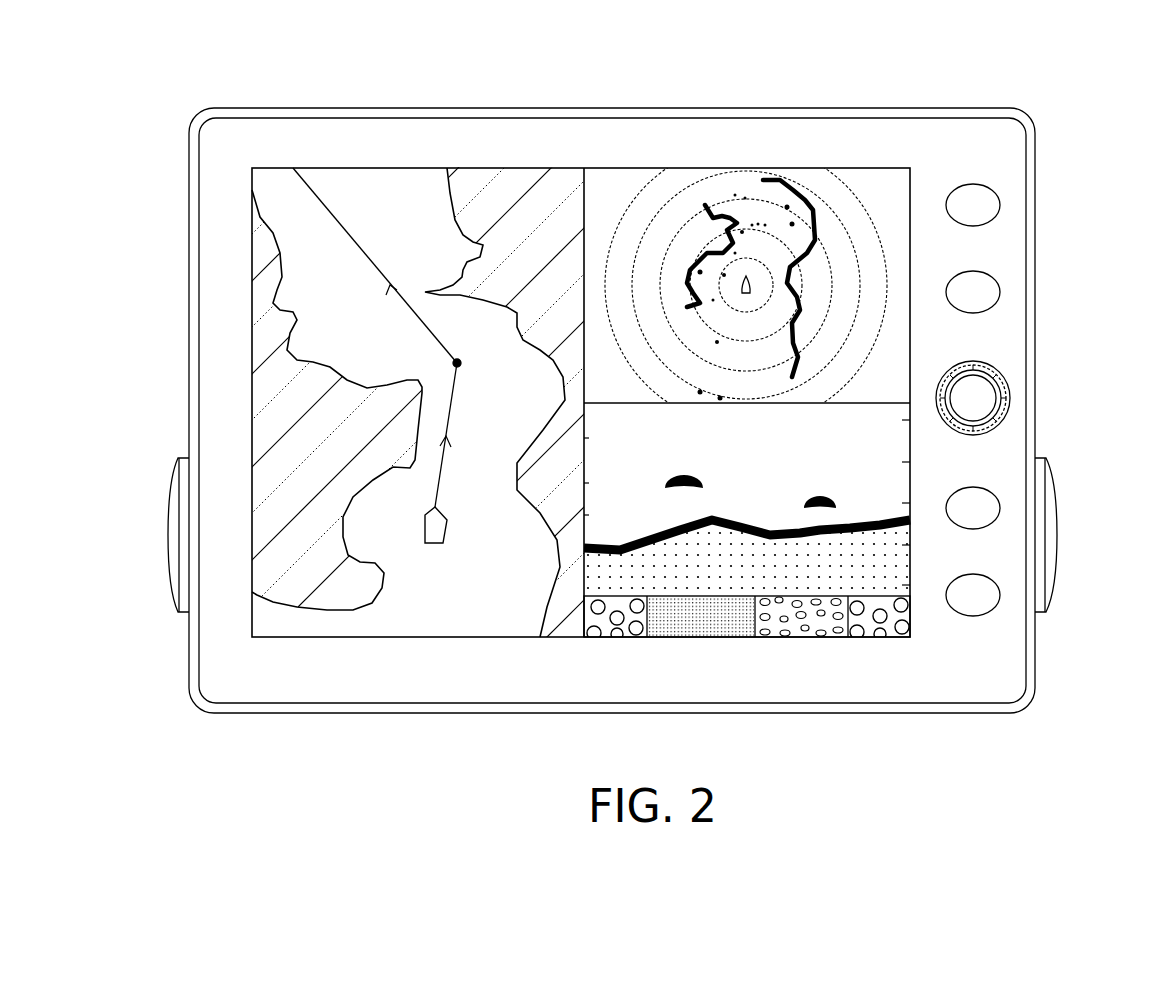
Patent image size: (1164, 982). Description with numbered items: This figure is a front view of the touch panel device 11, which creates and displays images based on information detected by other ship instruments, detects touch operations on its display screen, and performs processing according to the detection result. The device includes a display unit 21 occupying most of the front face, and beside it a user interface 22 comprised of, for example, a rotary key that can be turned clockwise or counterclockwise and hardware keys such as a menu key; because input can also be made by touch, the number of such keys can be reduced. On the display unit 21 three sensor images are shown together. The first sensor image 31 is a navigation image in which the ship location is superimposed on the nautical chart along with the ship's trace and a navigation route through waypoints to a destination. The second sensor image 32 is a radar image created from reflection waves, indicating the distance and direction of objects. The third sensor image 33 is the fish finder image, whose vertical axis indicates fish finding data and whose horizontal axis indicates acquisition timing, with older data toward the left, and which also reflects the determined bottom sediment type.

The touch panel device 11 is at (1106, 138).
The display unit 21 is at (923, 170).
The user interface 22 is at (1012, 370).
The first sensor image 31 is at (254, 196).
The second sensor image 32 is at (908, 263).
The third sensor image 33 is at (912, 575).